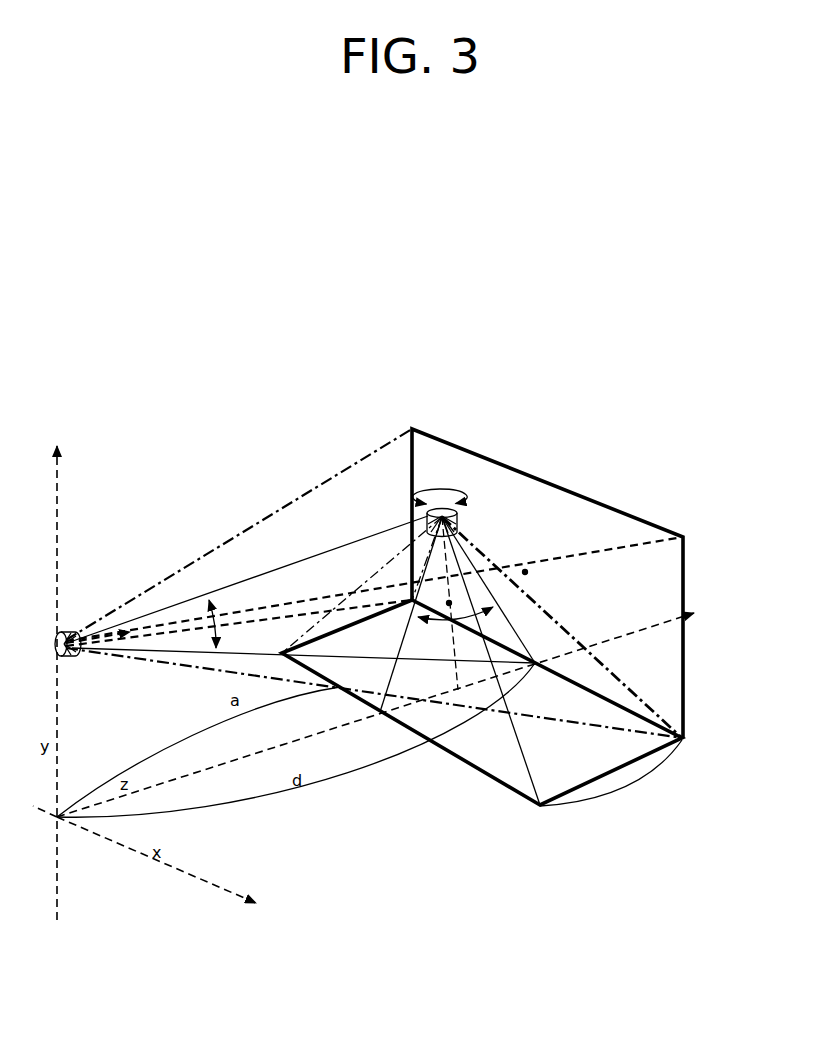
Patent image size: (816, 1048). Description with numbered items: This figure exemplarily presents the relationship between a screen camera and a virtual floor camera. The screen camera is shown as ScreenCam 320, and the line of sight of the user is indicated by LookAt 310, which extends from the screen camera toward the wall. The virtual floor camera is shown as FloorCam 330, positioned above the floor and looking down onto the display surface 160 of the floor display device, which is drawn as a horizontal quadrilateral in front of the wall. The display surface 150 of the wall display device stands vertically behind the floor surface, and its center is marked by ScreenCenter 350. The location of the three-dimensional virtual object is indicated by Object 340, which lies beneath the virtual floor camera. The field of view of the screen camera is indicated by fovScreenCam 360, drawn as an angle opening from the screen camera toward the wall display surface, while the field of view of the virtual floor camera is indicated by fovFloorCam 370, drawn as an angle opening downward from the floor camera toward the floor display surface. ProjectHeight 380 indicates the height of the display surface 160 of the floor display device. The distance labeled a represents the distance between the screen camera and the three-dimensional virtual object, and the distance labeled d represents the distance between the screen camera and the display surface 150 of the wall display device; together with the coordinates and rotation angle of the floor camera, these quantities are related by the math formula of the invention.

The display surface of the wall display device 150 is at (657, 527).
The display surface of the floor display device 160 is at (520, 794).
The LookAt 310 is at (141, 636).
The ScreenCam 320 is at (64, 632).
The FloorCam 330 is at (422, 512).
The Object 340 is at (448, 606).
The ScreenCenter 350 is at (526, 570).
The fovScreenCam 360 is at (215, 603).
The fovFloorCam 370 is at (430, 618).
The ProjectHeight 380 is at (667, 820).